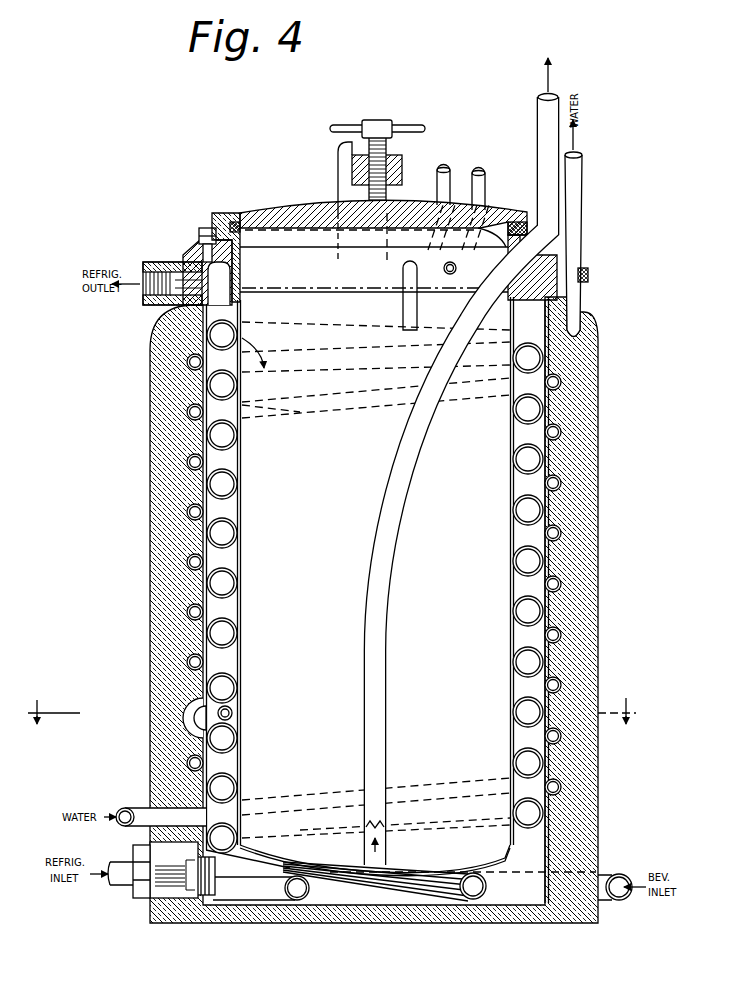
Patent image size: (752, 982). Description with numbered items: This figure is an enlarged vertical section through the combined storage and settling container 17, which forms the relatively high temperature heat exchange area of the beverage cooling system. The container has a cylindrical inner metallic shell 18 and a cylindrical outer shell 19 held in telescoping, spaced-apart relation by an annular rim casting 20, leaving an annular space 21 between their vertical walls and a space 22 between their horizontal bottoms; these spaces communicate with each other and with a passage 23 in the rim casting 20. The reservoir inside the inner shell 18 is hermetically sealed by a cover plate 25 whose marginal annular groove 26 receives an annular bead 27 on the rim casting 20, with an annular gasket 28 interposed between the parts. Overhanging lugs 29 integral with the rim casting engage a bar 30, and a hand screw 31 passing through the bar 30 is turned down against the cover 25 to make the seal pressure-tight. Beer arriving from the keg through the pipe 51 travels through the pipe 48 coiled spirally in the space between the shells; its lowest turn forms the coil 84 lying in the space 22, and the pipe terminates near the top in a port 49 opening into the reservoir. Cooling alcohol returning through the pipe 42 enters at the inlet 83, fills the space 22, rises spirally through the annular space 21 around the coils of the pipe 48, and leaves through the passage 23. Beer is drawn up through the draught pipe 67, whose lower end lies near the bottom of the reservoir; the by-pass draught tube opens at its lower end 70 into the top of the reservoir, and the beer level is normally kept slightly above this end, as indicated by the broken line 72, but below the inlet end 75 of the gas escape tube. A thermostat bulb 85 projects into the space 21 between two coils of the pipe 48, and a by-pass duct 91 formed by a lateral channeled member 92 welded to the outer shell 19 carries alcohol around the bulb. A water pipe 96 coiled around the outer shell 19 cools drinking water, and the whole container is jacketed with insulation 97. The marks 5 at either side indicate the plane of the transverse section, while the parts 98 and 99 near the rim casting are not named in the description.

The section line 5- 5 is at (331, 711).
The combined storage and settling container 17 is at (602, 570).
The inner metallic shell 18 is at (242, 612).
The outer shell 19 is at (200, 501).
The annular rim casting 20 is at (188, 255).
The annular space 21 is at (205, 456).
The bottom space 22 is at (367, 897).
The passage 23 is at (170, 265).
The cover plate 25 is at (307, 205).
The annular groove 26 is at (228, 213).
The annular bead 27 is at (248, 242).
The annular gasket 28 is at (238, 226).
The overhanging lugs 29 is at (341, 168).
The bar 30 is at (400, 160).
The hand screw 31 is at (370, 124).
The pipe 42 is at (121, 883).
The coiled beverage pipe 48 is at (240, 532).
The port 49 is at (250, 332).
The beverage supply pipe 51 is at (616, 870).
The draught pipe 67 is at (386, 683).
The lower end of by-pass draught tube 70 is at (402, 320).
The beer level line 72 is at (344, 288).
The inlet end of escape tube 75 is at (457, 268).
The inlet 83 is at (220, 896).
The coil 84 is at (302, 900).
The thermostat bulb 85 is at (238, 712).
The by-pass duct 91 is at (186, 700).
The lateral channeled member 92 is at (182, 716).
The water pipe 96 is at (558, 382).
The insulation 97 is at (586, 452).
The bolt 98 is at (207, 228).
The passage 99 is at (222, 308).